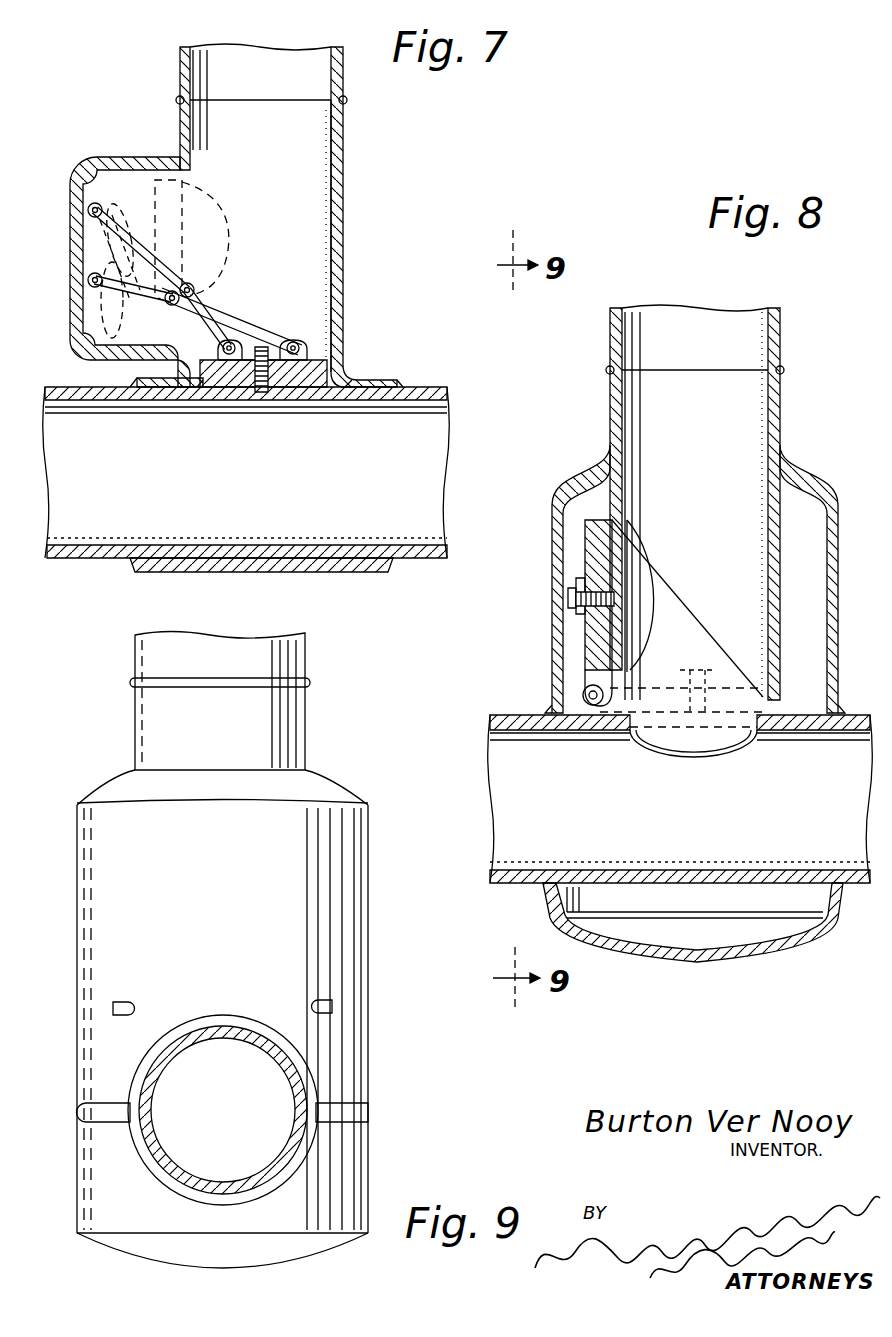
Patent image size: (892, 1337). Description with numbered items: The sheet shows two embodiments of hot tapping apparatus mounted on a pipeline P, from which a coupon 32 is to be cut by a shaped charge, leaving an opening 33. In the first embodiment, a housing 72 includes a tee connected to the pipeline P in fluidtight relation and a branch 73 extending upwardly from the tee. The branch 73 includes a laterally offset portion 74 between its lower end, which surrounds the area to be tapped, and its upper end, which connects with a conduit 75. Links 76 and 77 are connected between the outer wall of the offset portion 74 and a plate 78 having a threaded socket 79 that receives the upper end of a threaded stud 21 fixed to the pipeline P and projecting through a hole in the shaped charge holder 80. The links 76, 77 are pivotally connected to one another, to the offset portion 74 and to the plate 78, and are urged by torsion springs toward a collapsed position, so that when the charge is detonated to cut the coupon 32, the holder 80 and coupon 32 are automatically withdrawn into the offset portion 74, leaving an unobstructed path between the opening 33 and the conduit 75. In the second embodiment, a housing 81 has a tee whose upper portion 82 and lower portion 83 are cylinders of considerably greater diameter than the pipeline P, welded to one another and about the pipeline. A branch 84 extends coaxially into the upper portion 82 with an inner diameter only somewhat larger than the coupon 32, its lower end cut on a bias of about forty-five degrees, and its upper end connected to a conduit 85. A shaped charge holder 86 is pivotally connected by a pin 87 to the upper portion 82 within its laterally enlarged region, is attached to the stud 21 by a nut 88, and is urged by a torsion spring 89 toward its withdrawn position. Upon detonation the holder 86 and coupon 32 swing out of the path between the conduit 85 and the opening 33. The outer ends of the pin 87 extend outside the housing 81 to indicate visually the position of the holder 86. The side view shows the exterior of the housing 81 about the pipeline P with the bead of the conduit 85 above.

In FIG. 7, the housing 72 is at (345, 149).
In FIG. 7, the branch 73 is at (344, 190).
In FIG. 7, the laterally offset portion 74 is at (95, 157).
In FIG. 7, the conduit 75 is at (180, 60).
In FIG. 7, the link 76 is at (237, 303).
In FIG. 7, the link 77 is at (105, 305).
In FIG. 7, the plate 78 is at (303, 346).
In FIG. 7, the threaded socket 79 is at (273, 340).
In FIG. 7, the shaped charge holder 80 is at (312, 372).
In FIG. 7, the threaded stud 21 is at (267, 392).
In FIG. 8, the threaded stud 21 is at (568, 598).
In FIG. 7, the coupon 32 is at (218, 212).
In FIG. 8, the coupon 32 is at (634, 582).
In FIG. 8, the opening 33 is at (683, 753).
In FIG. 8, the housing 81 is at (781, 395).
In FIG. 9, the housing 81 is at (78, 823).
In FIG. 8, the upper portion of the tee 82 is at (553, 530).
In FIG. 9, the upper portion of the tee 82 is at (229, 877).
In FIG. 8, the lower portion of the tee 83 is at (785, 950).
In FIG. 8, the branch 84 is at (783, 441).
In FIG. 8, the conduit 85 is at (783, 336).
In FIG. 9, the conduit 85 is at (135, 659).
In FIG. 8, the shaped charge holder 86 is at (588, 623).
In FIG. 8, the pivot pin 87 is at (582, 693).
In FIG. 9, the pivot pin 87 is at (323, 1003).
In FIG. 8, the nut 88 is at (578, 580).
In FIG. 8, the torsion spring 89 is at (608, 686).
In FIG. 7, the pipeline P is at (432, 386).
In FIG. 8, the pipeline P is at (858, 713).
In FIG. 9, the pipeline P is at (210, 1032).